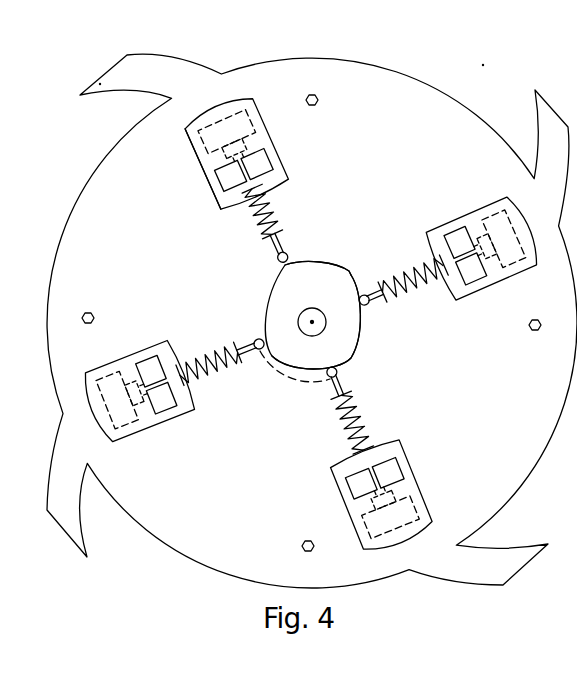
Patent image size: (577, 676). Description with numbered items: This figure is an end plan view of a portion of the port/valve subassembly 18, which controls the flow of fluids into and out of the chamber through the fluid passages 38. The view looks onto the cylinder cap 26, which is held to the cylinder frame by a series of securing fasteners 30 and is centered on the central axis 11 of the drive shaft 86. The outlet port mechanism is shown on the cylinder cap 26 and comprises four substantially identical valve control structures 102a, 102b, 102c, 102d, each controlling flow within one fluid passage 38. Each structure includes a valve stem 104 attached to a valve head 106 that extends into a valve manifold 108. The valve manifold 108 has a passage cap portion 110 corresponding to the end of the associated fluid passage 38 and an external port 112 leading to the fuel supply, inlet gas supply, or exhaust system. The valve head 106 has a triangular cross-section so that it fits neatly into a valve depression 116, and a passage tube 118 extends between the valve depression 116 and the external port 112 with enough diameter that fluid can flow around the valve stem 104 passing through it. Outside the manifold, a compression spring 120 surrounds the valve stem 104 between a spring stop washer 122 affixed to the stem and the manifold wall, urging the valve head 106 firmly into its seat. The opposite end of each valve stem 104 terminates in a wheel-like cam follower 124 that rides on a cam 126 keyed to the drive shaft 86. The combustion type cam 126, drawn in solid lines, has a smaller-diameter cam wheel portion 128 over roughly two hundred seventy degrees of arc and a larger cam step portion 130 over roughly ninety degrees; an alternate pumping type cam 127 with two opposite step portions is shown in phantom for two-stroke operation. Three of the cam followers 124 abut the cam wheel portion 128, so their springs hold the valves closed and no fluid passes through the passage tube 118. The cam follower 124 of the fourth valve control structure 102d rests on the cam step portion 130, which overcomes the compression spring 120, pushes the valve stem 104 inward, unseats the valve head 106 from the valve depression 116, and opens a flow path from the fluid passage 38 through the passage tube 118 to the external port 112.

The central axis 11 is at (309, 323).
The port/valve subassembly 18 is at (323, 470).
The cylinder cap 26 is at (312, 321).
The securing fasteners 30 is at (321, 98).
The fluid passages 38 is at (258, 129).
The drive shaft 86 is at (298, 309).
The valve control structure 102a is at (461, 196).
The valve control structure 102b is at (424, 460).
The valve control structure 102c is at (164, 431).
The fourth valve control structure 102d is at (191, 137).
The valve stem 104 is at (277, 222).
The valve head 106 is at (231, 119).
The valve manifold 108 is at (296, 154).
The passage cap portion 110 is at (417, 496).
The external port 112 is at (262, 164).
The valve depression 116 is at (123, 378).
The passage tube 118 is at (229, 161).
The compression spring 120 is at (255, 219).
The spring stop washer 122 is at (359, 397).
The cam follower 124 is at (293, 258).
The cam 126 is at (343, 319).
The alternate pumping type cam 127 is at (305, 377).
The cam wheel portion 128 is at (359, 343).
The cam step portion 130 is at (350, 271).